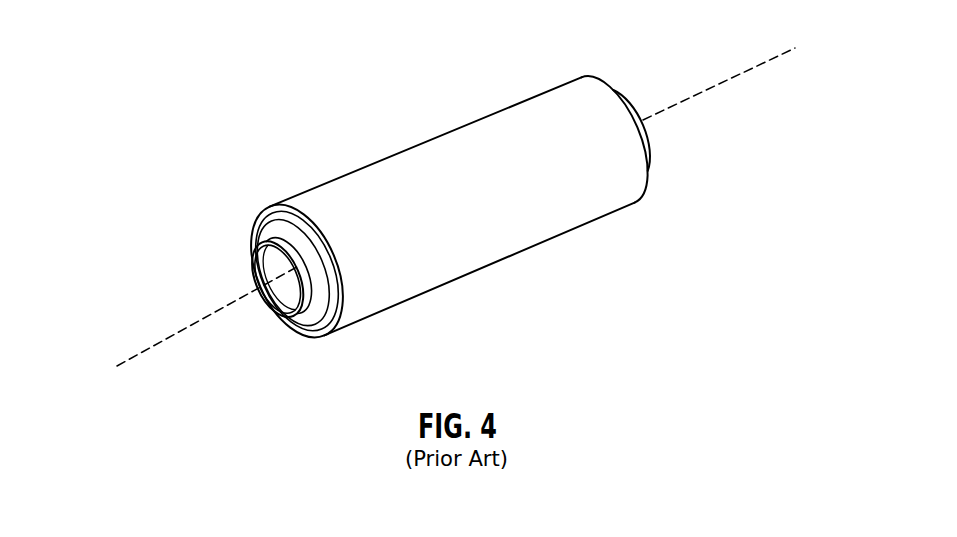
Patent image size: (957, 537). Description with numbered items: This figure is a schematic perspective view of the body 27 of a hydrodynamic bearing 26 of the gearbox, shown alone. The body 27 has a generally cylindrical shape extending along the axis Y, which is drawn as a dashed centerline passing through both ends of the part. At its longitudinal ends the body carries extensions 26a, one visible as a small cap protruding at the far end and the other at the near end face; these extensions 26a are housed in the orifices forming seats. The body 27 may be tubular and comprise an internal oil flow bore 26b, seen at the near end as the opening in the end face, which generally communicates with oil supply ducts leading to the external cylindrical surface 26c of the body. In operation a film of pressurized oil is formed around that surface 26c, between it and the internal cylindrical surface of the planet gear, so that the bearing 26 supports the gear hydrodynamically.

The hydrodynamic bearing 26 is at (603, 36).
The extensions 26a is at (648, 137).
The internal oil flow bore 26b is at (277, 285).
The external cylindrical surface 26c is at (453, 263).
The body 27 is at (577, 261).
The axis Y is at (780, 55).